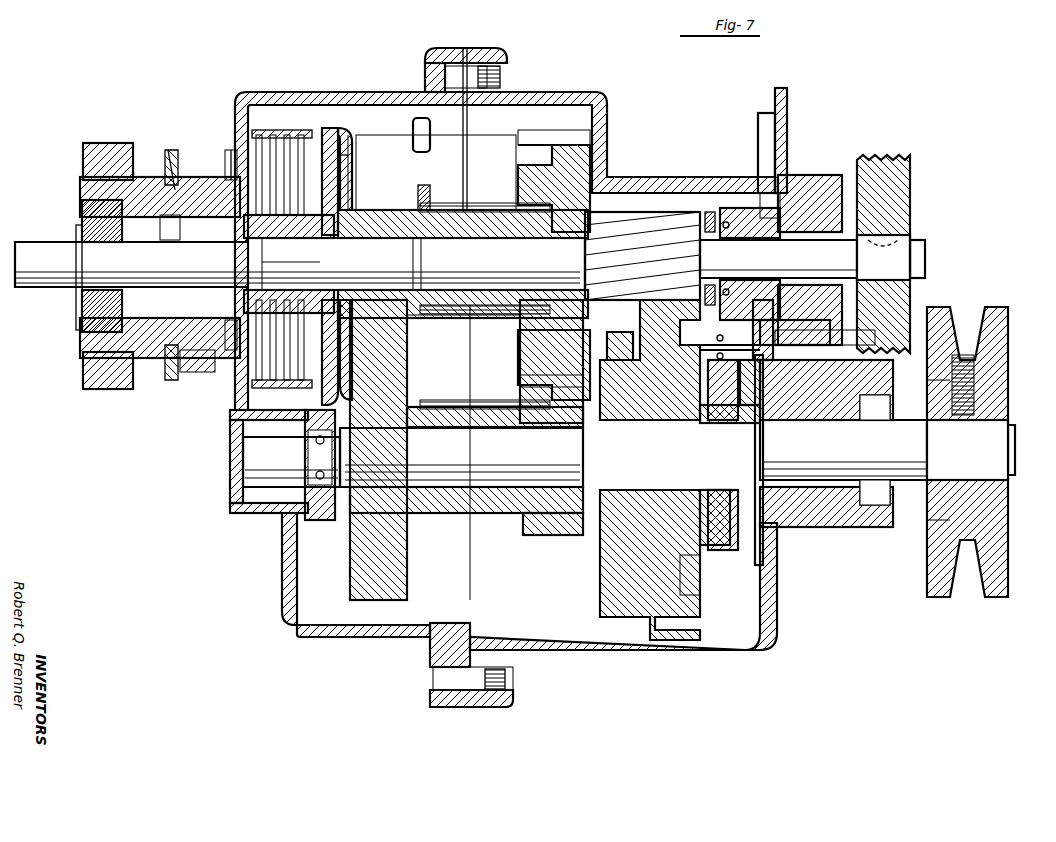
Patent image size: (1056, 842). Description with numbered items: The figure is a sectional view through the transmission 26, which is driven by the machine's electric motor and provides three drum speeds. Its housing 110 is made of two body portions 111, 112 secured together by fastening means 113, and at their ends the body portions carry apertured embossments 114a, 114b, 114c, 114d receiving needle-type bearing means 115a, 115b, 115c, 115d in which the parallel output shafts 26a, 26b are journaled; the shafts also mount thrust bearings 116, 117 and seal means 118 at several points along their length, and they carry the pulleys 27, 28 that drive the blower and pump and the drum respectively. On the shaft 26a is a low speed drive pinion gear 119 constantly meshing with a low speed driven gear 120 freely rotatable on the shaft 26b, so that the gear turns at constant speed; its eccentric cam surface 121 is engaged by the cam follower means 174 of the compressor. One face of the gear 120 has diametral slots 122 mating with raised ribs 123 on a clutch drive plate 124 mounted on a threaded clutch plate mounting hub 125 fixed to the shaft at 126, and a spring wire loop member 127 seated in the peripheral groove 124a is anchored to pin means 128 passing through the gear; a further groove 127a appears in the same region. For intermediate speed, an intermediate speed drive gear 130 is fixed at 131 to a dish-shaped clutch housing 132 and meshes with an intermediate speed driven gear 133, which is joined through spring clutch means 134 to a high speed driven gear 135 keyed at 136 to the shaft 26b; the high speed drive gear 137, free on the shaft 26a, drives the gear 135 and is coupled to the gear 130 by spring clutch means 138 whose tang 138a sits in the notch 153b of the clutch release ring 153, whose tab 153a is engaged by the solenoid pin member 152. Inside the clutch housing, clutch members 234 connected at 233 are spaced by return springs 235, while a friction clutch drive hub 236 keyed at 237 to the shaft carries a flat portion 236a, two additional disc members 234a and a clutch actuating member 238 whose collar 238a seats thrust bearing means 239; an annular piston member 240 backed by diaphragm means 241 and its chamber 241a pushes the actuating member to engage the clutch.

The transmission 26 is at (655, 113).
The output shaft 26a is at (925, 255).
The output shaft 26b is at (1010, 448).
The pulley 27 is at (908, 195).
The pulley 28 is at (1008, 550).
The housing 110 is at (540, 80).
The body portion 111 is at (316, 100).
The body portion 112 is at (670, 178).
The fastening means 113 is at (510, 78).
The apertured embossment 114a is at (140, 315).
The apertured embossment 114b is at (765, 290).
The apertured embossment 114c is at (262, 525).
The apertured embossment 114d is at (826, 522).
The bearing means 115a is at (180, 244).
The bearing means 115b is at (750, 244).
The bearing means 115c is at (262, 440).
The bearing means 115d is at (790, 488).
The thrust bearing 116 is at (322, 505).
The thrust bearing 117 is at (712, 210).
The seal means 118 is at (110, 300).
The low speed drive pinion gear 119 is at (615, 280).
The low speed driven gear 120 is at (698, 625).
The eccentric cam surface 121 is at (625, 640).
The diametral slots 122 is at (690, 548).
The diametral raised ribs 123 is at (700, 395).
The clutch drive plate 124 is at (738, 352).
The peripheral groove 124a is at (712, 552).
The clutch plate mounting hub 125 is at (730, 415).
The securement 126 is at (693, 517).
The resilient spring wire loop member 127 is at (728, 570).
The pin 127a is at (718, 337).
The pin means 128 is at (650, 360).
The intermediate speed drive gear 130 is at (370, 208).
The fixing 131 is at (344, 205).
The clutch housing 132 is at (348, 147).
The intermediate speed driven gear 133 is at (405, 385).
The spring clutch means 134 is at (474, 405).
The high speed driven gear 135 is at (552, 535).
The key 136 is at (560, 440).
The high speed drive gear 137 is at (520, 160).
The spring clutch means 138 is at (476, 208).
The axially directed tang 138a is at (426, 228).
The solenoid extension pin member 152 is at (432, 138).
The clutch release ring 153 is at (432, 318).
The radial tab 153a is at (425, 185).
The notch 153b is at (416, 210).
The cam follower means 174 is at (628, 365).
The connection 233 is at (265, 133).
The clutch members 234 is at (332, 343).
The additional disc members 234a is at (308, 130).
The return springs 235 is at (292, 212).
The friction clutch drive hub 236 is at (325, 243).
The radially extending flat portion 236a is at (348, 150).
The key 237 is at (320, 264).
The clutch actuating member 238 is at (240, 148).
The collar portion 238a is at (232, 335).
The thrust bearing means 239 is at (212, 150).
The annular piston member 240 is at (180, 385).
The diaphragm means 241 is at (170, 147).
The diaphragm chamber 241a is at (158, 388).